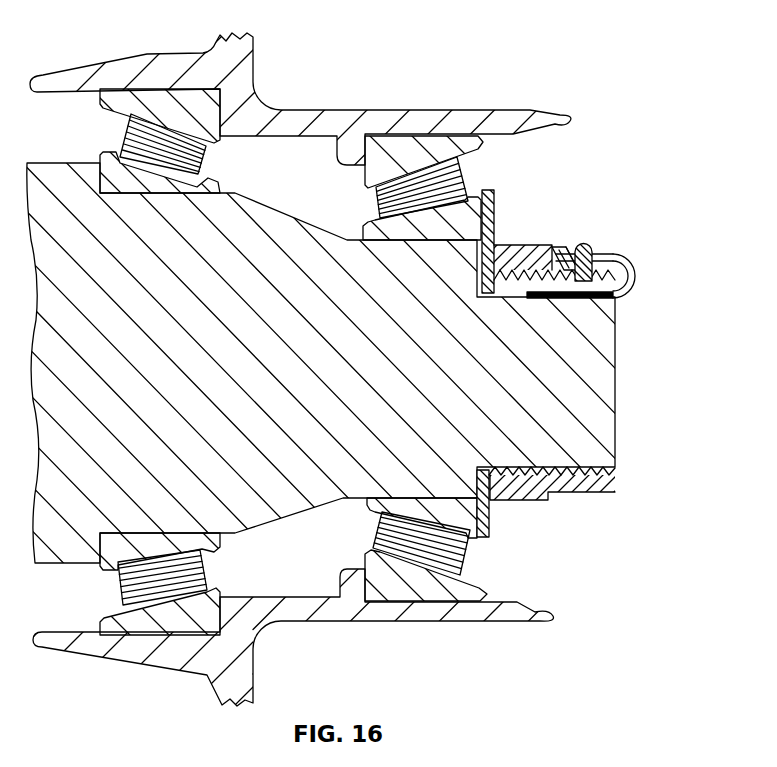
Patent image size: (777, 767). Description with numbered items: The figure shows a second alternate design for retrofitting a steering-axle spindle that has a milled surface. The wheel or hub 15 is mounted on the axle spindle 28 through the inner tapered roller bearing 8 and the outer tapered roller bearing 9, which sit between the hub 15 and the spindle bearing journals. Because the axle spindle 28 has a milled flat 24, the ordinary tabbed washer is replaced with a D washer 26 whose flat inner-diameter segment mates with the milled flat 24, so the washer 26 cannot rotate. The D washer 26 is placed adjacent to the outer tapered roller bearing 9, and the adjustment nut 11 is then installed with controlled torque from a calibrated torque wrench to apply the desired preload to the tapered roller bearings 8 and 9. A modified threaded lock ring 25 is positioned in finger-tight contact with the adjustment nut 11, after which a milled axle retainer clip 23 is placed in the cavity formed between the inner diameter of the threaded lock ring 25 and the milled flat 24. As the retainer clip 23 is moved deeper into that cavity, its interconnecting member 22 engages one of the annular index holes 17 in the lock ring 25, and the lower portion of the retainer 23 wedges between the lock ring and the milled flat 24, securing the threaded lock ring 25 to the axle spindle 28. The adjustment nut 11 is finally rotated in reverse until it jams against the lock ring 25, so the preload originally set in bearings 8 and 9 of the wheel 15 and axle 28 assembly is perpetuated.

The inner tapered roller bearing 8 is at (185, 157).
The outer tapered roller bearing 9 is at (374, 193).
The adjustment nut 11 is at (497, 503).
The wheel or hub 15 is at (307, 110).
The annular index holes 17 is at (603, 258).
The interconnecting member 22 is at (585, 243).
The milled axle retainer clip 23 is at (634, 268).
The milled flat 24 is at (583, 353).
The modified threaded lock ring 25 is at (577, 493).
The D washer 26 is at (486, 190).
The axle spindle 28 is at (316, 353).